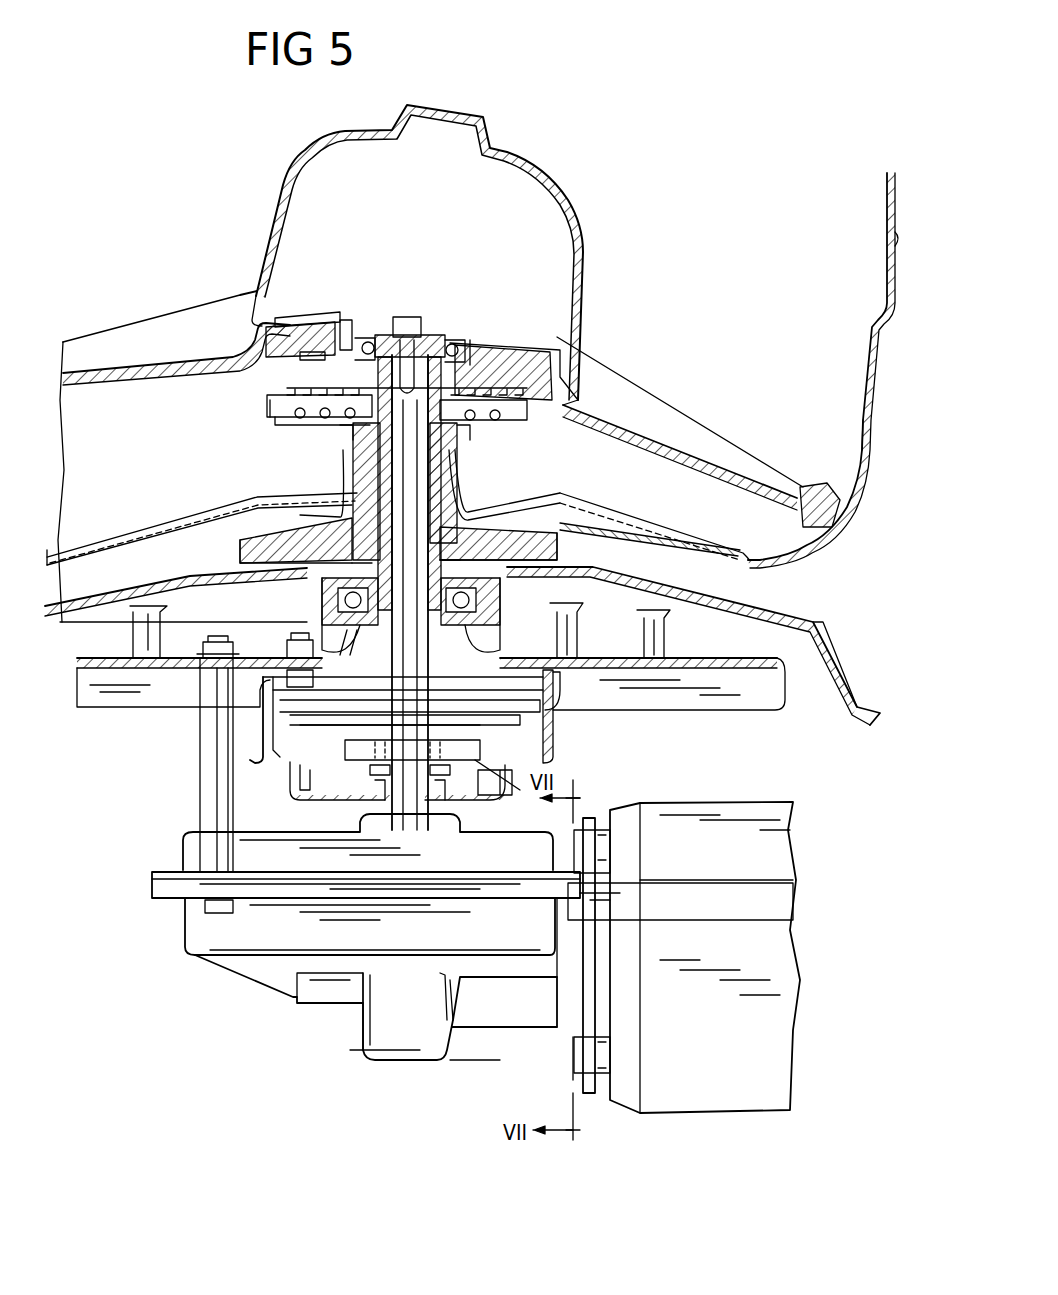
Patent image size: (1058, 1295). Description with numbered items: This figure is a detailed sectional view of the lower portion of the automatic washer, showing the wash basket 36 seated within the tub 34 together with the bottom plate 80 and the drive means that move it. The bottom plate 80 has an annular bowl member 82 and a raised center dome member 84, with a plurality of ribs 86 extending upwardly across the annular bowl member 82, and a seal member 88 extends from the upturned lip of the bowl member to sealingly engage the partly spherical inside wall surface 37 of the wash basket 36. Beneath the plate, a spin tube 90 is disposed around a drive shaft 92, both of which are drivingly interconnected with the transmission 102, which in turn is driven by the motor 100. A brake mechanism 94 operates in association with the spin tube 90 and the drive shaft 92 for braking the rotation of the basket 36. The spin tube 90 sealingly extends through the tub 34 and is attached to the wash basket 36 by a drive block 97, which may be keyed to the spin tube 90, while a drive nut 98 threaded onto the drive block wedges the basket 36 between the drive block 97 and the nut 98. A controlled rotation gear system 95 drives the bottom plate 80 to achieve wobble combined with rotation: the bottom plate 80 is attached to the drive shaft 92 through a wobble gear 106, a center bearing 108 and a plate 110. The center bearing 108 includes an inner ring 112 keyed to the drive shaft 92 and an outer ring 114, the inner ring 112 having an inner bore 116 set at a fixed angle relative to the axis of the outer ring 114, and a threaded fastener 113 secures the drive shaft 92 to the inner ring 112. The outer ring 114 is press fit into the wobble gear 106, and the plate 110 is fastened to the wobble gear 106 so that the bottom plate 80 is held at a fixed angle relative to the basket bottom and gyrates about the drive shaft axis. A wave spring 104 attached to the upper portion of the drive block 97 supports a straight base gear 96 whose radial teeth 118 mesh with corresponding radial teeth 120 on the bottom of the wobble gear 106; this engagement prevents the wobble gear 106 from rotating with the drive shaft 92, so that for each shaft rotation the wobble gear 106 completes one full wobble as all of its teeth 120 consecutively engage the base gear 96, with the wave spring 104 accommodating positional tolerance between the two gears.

The tub 34 is at (815, 622).
The wash basket 36 is at (893, 238).
The partly spherical inside wall surface 37 is at (868, 385).
The bottom plate 80 is at (147, 305).
The annular bowl member 82 is at (108, 389).
The raised center dome member 84 is at (563, 193).
The ribs 86 is at (663, 417).
The seal member 88 is at (838, 478).
The spin tube 90 is at (428, 655).
The drive shaft 92 is at (393, 650).
The brake mechanism 94 is at (553, 735).
The controlled rotation gear system 95 is at (260, 418).
The straight base gear 96 is at (287, 412).
The drive block 97 is at (458, 496).
The drive nut 98 is at (350, 437).
The motor 100 is at (688, 1100).
The transmission 102 is at (267, 976).
The wave spring 104 is at (317, 420).
The wobble gear 106 is at (273, 350).
The center bearing 108 is at (475, 345).
The plate 110 is at (300, 318).
The inner ring 112 is at (447, 345).
The threaded fastener 113 is at (410, 318).
The outer ring 114 is at (365, 340).
The inner bore 116 is at (379, 337).
The radial teeth 118 is at (270, 386).
The radial teeth 120 is at (236, 366).